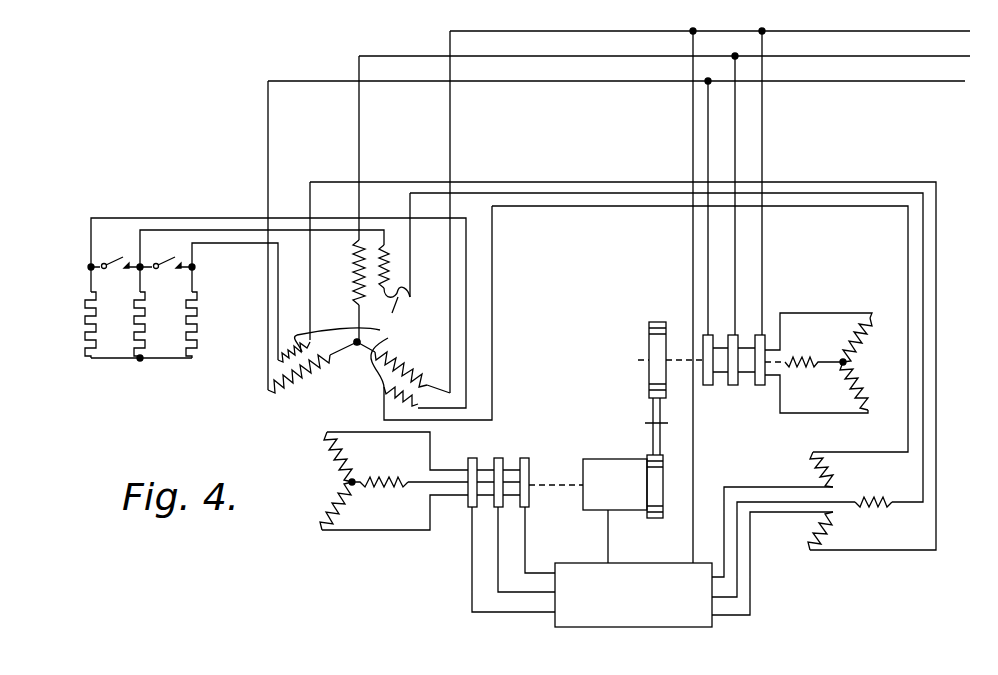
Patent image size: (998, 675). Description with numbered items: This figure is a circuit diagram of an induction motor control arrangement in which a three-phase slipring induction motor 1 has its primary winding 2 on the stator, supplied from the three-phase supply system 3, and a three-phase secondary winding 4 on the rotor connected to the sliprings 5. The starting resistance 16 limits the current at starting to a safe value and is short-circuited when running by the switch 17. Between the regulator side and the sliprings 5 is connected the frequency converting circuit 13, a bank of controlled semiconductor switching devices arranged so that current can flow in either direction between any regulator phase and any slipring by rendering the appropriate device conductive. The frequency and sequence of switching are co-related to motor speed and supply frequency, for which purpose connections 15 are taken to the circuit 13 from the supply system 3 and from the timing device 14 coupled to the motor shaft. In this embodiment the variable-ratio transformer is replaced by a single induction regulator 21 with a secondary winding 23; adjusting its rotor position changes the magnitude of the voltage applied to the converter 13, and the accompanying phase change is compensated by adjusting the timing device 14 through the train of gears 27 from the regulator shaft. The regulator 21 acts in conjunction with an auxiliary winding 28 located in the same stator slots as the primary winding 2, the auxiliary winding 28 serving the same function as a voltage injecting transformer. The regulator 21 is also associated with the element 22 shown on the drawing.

The slipring induction motor 1 is at (351, 412).
The primary winding 2 is at (294, 379).
The supply system 3 is at (628, 59).
The secondary winding 4 is at (389, 481).
The sliprings 5 is at (525, 471).
The frequency converting circuit 13 is at (633, 595).
The timing device 14 is at (615, 484).
The connections 15 is at (650, 538).
The resistance 16 is at (158, 326).
The switch 17 is at (141, 249).
The induction regulator 21 is at (889, 444).
The auxiliary motor 22 is at (837, 364).
The secondary winding 23 is at (850, 501).
The train of gears 27 is at (661, 420).
The auxiliary winding 28 is at (352, 342).